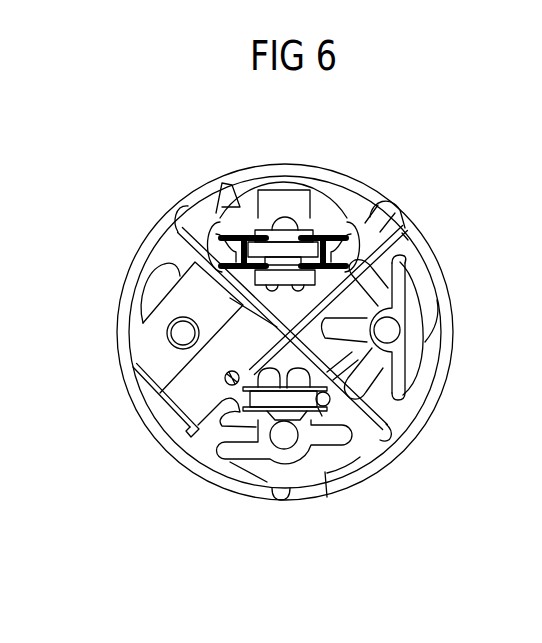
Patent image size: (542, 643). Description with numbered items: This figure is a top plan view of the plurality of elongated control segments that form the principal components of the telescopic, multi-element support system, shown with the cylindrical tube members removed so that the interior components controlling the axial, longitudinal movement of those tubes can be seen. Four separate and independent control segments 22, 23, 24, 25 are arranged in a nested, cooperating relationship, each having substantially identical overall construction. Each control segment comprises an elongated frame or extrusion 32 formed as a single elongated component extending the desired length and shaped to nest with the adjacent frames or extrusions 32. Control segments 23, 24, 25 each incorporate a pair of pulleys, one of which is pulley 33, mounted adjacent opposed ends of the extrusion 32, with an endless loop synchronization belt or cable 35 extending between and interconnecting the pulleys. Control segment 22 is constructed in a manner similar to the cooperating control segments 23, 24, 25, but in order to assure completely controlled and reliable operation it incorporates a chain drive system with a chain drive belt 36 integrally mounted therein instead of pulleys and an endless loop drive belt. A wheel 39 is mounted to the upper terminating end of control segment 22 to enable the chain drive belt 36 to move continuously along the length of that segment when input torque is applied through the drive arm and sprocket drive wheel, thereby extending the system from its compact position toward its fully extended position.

The control segment 22 is at (231, 203).
The control segment 23 is at (168, 429).
The control segment 24 is at (265, 475).
The control segment 25 is at (413, 300).
The frame or extrusion 32 is at (365, 223).
The pulley 33 is at (402, 233).
The endless loop synchronization belt or cable 35 is at (352, 418).
The chain drive belt 36 is at (307, 228).
The wheel 39 is at (277, 256).